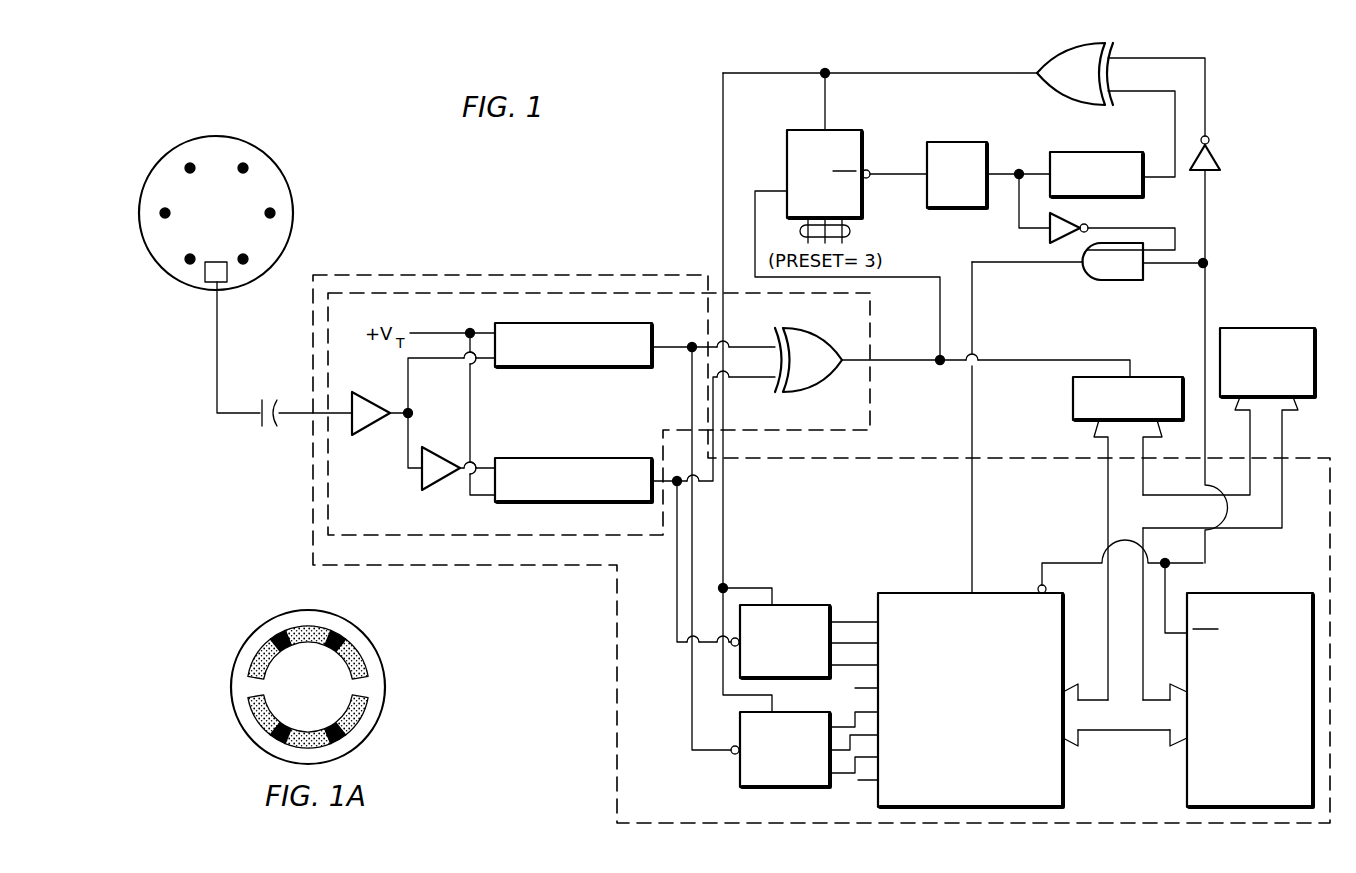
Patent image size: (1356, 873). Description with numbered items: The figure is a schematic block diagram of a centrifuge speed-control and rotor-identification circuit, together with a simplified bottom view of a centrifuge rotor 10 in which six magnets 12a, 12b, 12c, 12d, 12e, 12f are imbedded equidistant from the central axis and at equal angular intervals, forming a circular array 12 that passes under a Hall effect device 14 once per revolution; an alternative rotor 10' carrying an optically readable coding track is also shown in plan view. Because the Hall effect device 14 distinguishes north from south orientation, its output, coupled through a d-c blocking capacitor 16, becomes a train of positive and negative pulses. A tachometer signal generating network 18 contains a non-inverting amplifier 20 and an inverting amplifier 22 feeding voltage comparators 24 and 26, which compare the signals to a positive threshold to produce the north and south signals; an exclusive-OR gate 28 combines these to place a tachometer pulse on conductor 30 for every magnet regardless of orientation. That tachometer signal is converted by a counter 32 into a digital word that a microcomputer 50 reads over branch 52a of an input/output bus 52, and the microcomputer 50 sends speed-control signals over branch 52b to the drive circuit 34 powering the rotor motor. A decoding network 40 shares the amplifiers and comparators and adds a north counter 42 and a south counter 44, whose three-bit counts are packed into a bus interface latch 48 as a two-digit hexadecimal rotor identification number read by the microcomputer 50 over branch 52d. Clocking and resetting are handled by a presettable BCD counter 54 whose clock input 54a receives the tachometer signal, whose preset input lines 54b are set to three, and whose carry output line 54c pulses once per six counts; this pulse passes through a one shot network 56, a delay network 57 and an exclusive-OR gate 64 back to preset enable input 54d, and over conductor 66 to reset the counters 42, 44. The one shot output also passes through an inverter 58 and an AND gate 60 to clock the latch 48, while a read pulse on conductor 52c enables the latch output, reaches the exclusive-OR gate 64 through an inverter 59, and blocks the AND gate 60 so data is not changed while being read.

In FIG. 1, the centrifuge rotor 10 is at (244, 213).
In FIG. 1A, the rotor 10' is at (298, 687).
In FIG. 1, the circular array 12 is at (262, 168).
In FIG. 1, the magnet 12a is at (246, 262).
In FIG. 1, the magnet 12b is at (273, 216).
In FIG. 1, the magnet 12c is at (246, 165).
In FIG. 1, the magnet 12d is at (188, 165).
In FIG. 1, the magnet 12e is at (163, 210).
In FIG. 1, the magnet 12f is at (188, 263).
In FIG. 1, the Hall effect device 14 is at (220, 284).
In FIG. 1, the d-c blocking capacitor 16 is at (262, 426).
In FIG. 1, the tachometer signal generating network 18 is at (324, 496).
In FIG. 1, the non-inverting amplifier 20 is at (378, 425).
In FIG. 1, the inverting amplifier 22 is at (448, 480).
In FIG. 1, the voltage comparator 24 is at (545, 367).
In FIG. 1, the voltage comparator 26 is at (580, 458).
In FIG. 1, the exclusive-OR gate 28 is at (812, 342).
In FIG. 1, the conductor 30 is at (884, 360).
In FIG. 1, the counter 32 is at (1073, 398).
In FIG. 1, the drive circuit 34 is at (1258, 322).
In FIG. 1, the decoding network 40 is at (622, 276).
In FIG. 1, the north counter 42 is at (748, 787).
In FIG. 1, the south counter 44 is at (798, 605).
In FIG. 1, the bus interface latch 48 is at (902, 580).
In FIG. 1, the microcomputer 50 is at (1250, 593).
In FIG. 1, the input/output bus 52 is at (1168, 713).
In FIG. 1, the bus branch 52a is at (1106, 470).
In FIG. 1, the bus branch 52b is at (1282, 430).
In FIG. 1, the conductor 52c is at (1175, 578).
In FIG. 1, the bus branch 52d is at (1080, 713).
In FIG. 1, the presettable BCD counter 54 is at (787, 145).
In FIG. 1, the clock input 54a is at (752, 178).
In FIG. 1, the preset input lines 54b is at (850, 233).
In FIG. 1, the carry output line 54c is at (898, 172).
In FIG. 1, the preset enable input 54d is at (828, 110).
In FIG. 1, the one shot network 56 is at (960, 142).
In FIG. 1, the delay network 57 is at (1085, 152).
In FIG. 1, the inverter 58 is at (1058, 242).
In FIG. 1, the inverter 59 is at (1222, 153).
In FIG. 1, the AND gate 60 is at (1105, 282).
In FIG. 1, the exclusive-OR gate 64 is at (1056, 38).
In FIG. 1, the conductor 66 is at (722, 160).